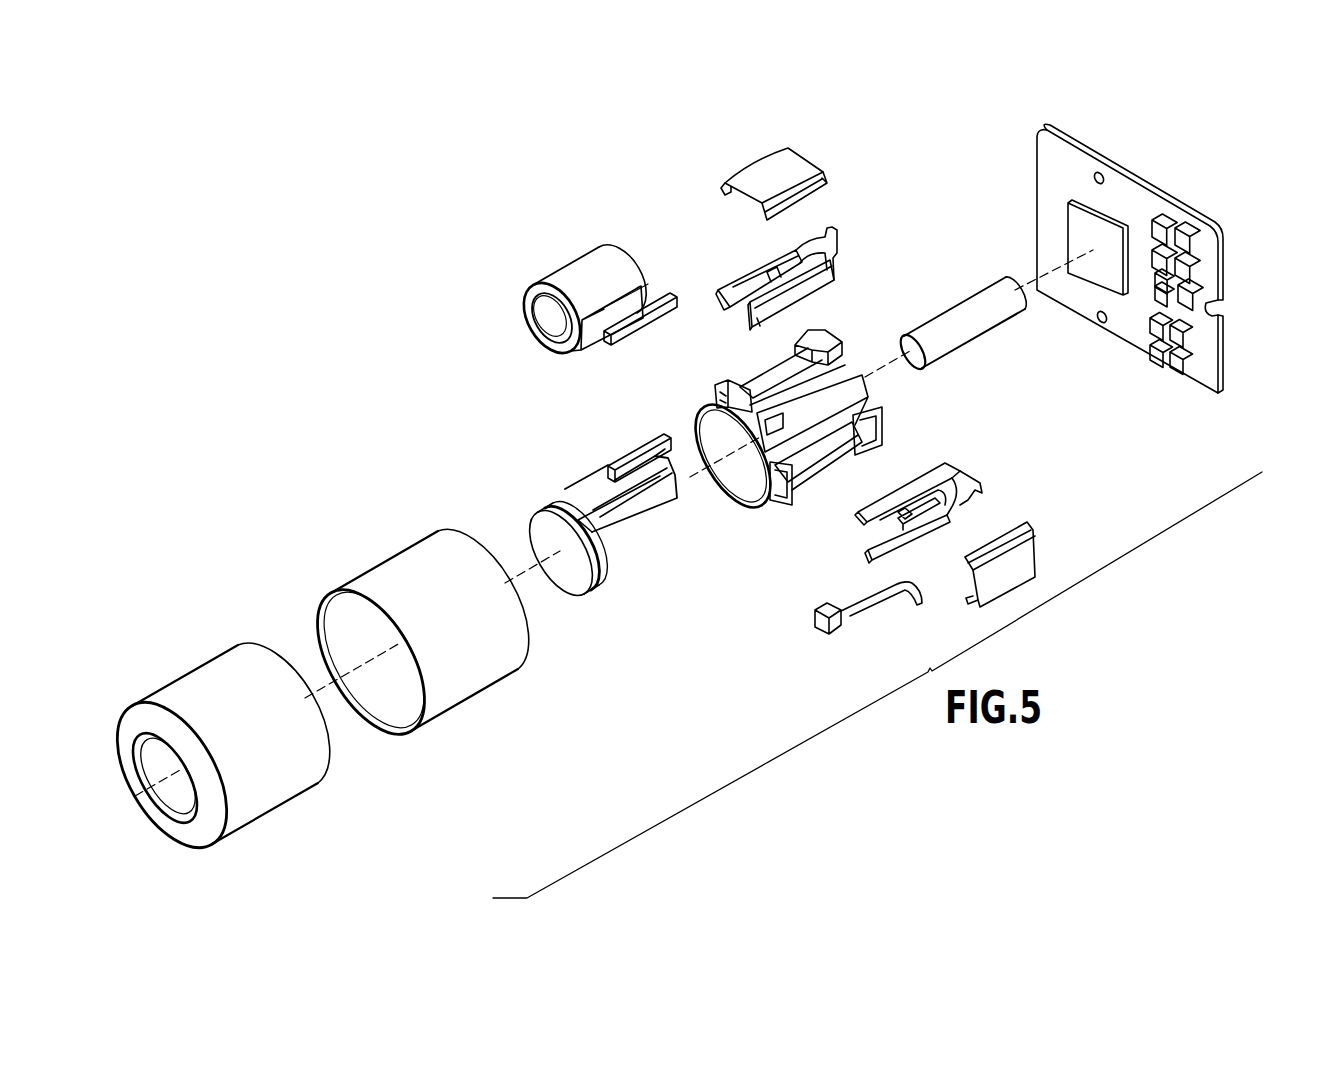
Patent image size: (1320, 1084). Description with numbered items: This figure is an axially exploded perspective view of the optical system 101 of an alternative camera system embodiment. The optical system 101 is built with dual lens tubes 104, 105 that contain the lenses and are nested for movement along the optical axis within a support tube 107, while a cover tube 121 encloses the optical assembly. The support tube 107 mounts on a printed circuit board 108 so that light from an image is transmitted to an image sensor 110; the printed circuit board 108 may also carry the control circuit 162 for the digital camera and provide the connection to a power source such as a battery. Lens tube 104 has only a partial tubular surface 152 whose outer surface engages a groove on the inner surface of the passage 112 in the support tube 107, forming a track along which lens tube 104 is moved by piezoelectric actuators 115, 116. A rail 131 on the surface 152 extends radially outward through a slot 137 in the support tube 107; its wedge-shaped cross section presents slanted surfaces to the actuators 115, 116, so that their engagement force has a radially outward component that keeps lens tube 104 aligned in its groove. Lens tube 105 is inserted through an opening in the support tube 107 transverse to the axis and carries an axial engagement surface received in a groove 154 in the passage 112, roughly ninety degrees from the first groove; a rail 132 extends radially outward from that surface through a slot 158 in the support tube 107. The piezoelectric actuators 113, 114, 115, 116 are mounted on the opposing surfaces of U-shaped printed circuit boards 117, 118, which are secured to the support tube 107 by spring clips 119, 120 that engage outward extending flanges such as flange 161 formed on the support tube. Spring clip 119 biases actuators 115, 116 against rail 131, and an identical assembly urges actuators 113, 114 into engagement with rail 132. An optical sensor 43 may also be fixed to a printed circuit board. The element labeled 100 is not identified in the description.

The optical sensor 43 is at (822, 606).
The housing 100 is at (853, 408).
The optical system 101 is at (376, 466).
The lens tube 104 is at (598, 517).
The lens tube 105 is at (595, 299).
The support tube 107 is at (920, 366).
The printed circuit board 108 is at (1136, 254).
The image sensor 110 is at (1100, 245).
The passage 112 is at (726, 484).
The piezoelectric actuator 113 is at (876, 527).
The piezoelectric actuator 114 is at (922, 522).
The piezoelectric actuator 115 is at (770, 264).
The piezoelectric actuator 116 is at (800, 280).
The U-shaped printed circuit board 117 is at (914, 503).
The U-shaped printed circuit board 118 is at (792, 266).
The spring clip 119 is at (798, 150).
The spring clip 120 is at (1033, 565).
The cover tube 121 is at (382, 570).
The rail 131 is at (636, 448).
The rail 132 is at (630, 336).
The slot 137 is at (768, 372).
The partial tubular surface 152 is at (622, 525).
The groove 154 is at (640, 287).
The slot 158 is at (822, 458).
The flange 161 is at (785, 498).
The control circuit 162 is at (1183, 223).